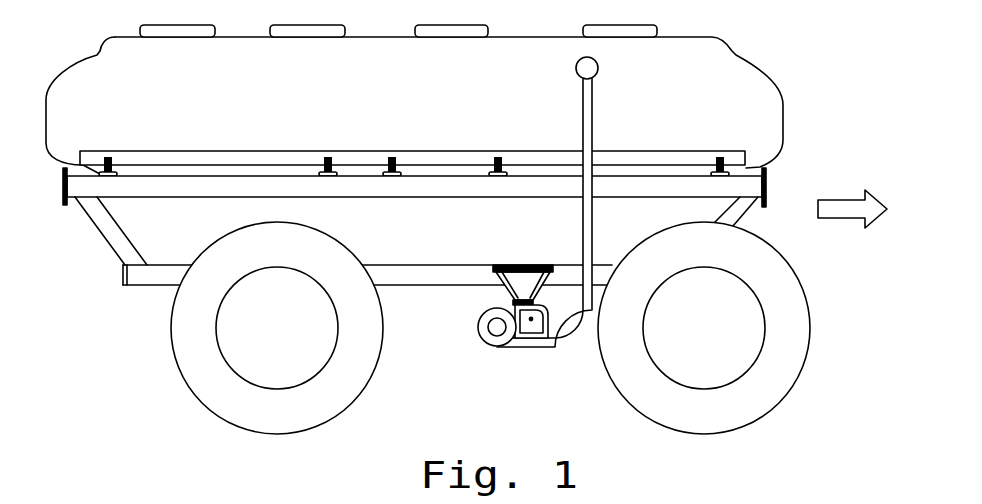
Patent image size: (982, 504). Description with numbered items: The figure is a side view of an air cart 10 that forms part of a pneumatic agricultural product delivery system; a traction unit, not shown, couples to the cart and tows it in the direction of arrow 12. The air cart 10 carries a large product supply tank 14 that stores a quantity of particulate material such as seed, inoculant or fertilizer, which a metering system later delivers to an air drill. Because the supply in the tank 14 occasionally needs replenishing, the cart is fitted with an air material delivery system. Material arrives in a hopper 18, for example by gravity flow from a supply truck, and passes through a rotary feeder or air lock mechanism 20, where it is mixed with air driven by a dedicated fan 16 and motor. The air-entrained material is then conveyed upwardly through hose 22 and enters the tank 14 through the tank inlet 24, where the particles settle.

The air cart 10 is at (118, 301).
The arrow 12 is at (848, 197).
The product supply tank 14 is at (465, 90).
The fan 16 is at (490, 335).
The hopper 18 is at (520, 265).
The rotary feeder or air lock mechanism 20 is at (537, 322).
The hose 22 is at (584, 351).
The tank inlet 24 is at (598, 68).